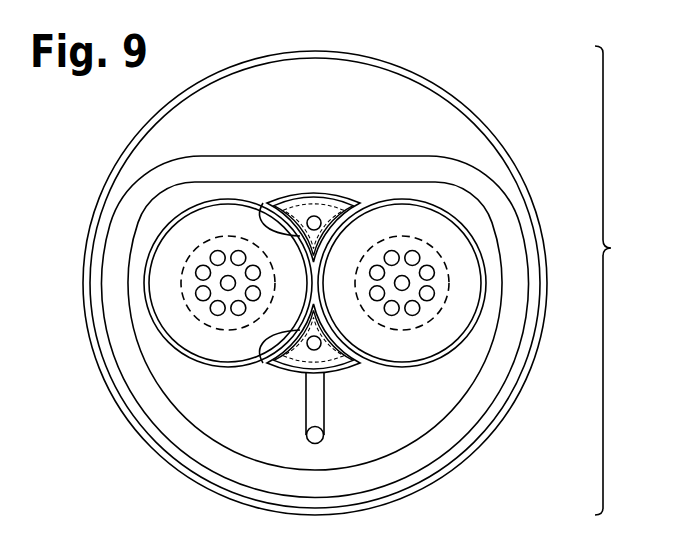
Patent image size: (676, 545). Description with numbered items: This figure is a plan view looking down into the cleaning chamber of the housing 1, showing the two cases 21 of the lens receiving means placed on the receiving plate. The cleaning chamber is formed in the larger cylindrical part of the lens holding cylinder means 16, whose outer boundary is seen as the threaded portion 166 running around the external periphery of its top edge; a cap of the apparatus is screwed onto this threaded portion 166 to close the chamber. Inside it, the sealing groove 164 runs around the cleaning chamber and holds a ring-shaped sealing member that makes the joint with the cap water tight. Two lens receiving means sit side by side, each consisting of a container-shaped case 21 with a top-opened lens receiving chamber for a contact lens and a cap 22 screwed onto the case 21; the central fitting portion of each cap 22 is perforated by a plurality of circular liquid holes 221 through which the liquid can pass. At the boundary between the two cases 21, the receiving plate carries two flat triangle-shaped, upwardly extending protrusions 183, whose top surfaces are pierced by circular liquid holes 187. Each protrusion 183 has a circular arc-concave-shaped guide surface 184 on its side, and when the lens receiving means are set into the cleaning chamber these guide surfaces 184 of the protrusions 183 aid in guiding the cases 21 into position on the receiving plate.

The housing 1 is at (466, 159).
The lens holding cylinder means 16 is at (616, 280).
The case 21 is at (153, 247).
The cap 22 is at (212, 357).
The sealing groove 164 is at (148, 358).
The threaded portion 166 is at (122, 158).
The protrusions 183 is at (332, 213).
The guide surface 184 is at (263, 204).
The liquid holes 187 is at (314, 216).
The liquid holes 221 is at (200, 303).